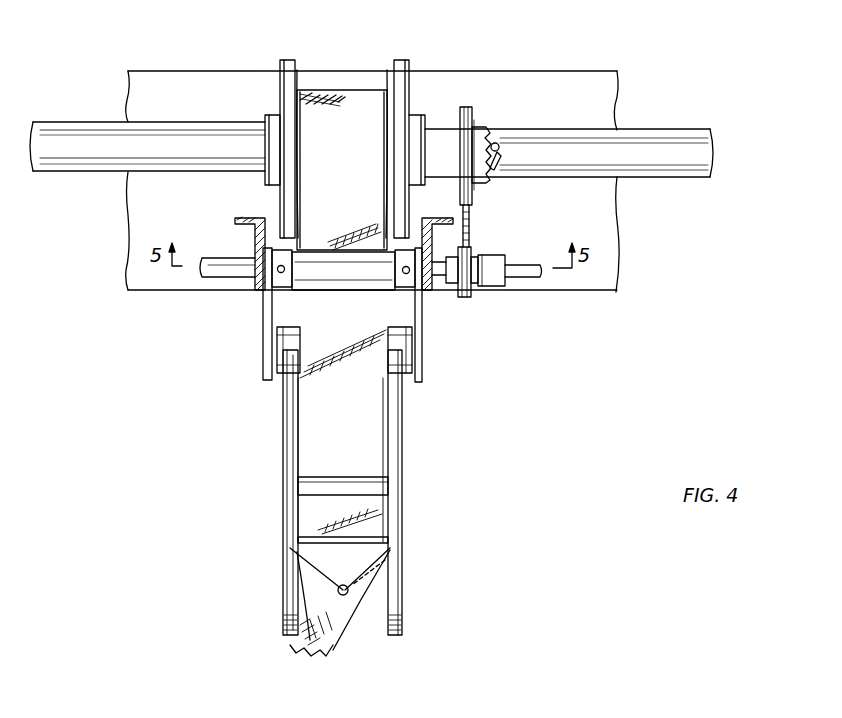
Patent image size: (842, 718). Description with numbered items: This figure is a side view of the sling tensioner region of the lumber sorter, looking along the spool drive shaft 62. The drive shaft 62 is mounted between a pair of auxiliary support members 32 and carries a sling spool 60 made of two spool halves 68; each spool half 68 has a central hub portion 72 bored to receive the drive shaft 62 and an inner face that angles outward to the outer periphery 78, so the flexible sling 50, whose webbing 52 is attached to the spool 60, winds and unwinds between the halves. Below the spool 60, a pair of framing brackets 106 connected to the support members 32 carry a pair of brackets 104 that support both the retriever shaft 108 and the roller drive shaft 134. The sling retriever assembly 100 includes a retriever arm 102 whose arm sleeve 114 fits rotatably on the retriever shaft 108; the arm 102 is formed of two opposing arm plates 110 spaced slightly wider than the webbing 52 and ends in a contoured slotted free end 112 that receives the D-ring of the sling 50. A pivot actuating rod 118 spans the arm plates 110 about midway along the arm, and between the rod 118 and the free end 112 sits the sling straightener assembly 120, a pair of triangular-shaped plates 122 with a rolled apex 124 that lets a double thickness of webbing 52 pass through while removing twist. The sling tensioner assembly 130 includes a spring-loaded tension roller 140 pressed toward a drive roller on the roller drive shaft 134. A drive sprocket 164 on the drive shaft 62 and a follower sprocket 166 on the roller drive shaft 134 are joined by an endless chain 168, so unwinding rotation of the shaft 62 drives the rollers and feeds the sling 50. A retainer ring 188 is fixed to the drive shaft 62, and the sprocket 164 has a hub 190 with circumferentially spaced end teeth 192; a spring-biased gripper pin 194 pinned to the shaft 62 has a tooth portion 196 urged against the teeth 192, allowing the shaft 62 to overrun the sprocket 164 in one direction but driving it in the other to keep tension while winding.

The auxiliary support member 32 is at (600, 82).
The flexible sling 50 is at (352, 100).
The flexible webbing 52 is at (338, 440).
The sling spool 60 is at (395, 155).
The spool drive shaft 62 is at (90, 128).
The spool half 68 is at (297, 100).
The central hub portion 72 is at (270, 110).
The outer periphery 78 is at (287, 62).
The sling retriever assembly 100 is at (428, 427).
The retriever arm 102 is at (283, 445).
The bracket 104 is at (420, 310).
The framing bracket 106 is at (257, 245).
The retriever shaft 108 is at (412, 380).
The arm plate 110 is at (285, 513).
The slotted free end 112 is at (285, 615).
The arm sleeve 114 is at (278, 378).
The pivot actuating rod 118 is at (300, 487).
The sling straightener assembly 120 is at (288, 548).
The triangular-shaped plate 122 is at (375, 553).
The rolled apex 124 is at (349, 595).
The sling tensioner assembly 130 is at (518, 243).
The roller drive shaft 134 is at (532, 275).
The tension roller 140 is at (320, 285).
The drive sprocket 164 is at (475, 115).
The follower sprocket 166 is at (473, 295).
The endless chain 168 is at (470, 230).
The retainer ring 188 is at (463, 128).
The hub 190 is at (483, 125).
The end teeth 192 is at (570, 132).
The gripper pin 194 is at (497, 155).
The tooth portion 196 is at (495, 152).